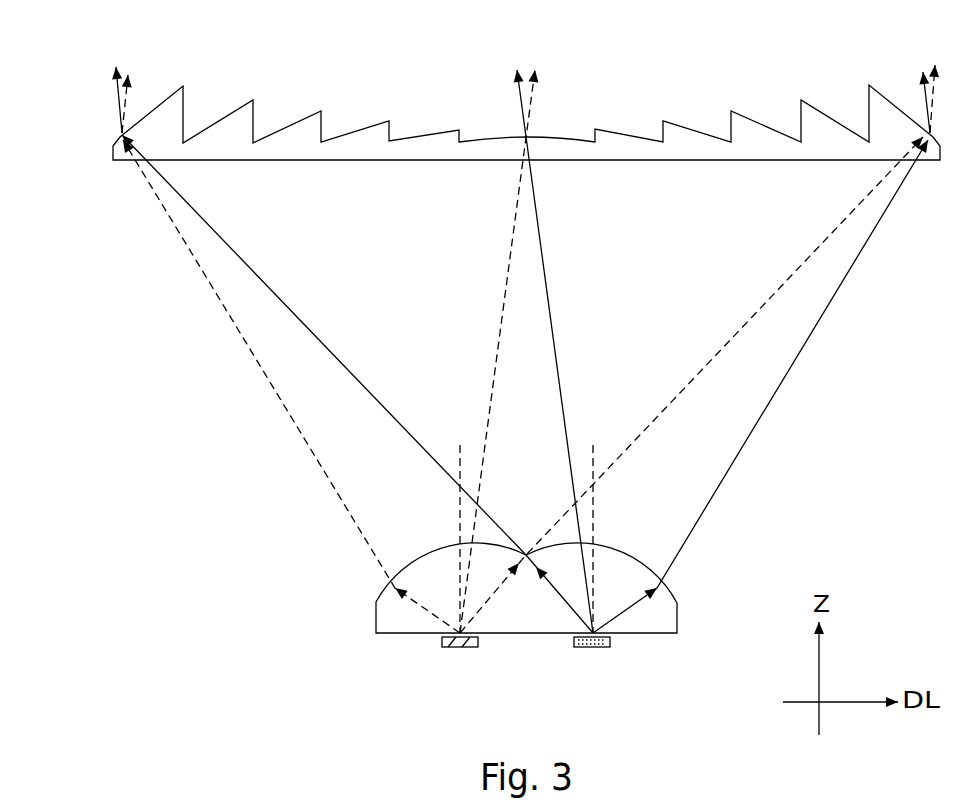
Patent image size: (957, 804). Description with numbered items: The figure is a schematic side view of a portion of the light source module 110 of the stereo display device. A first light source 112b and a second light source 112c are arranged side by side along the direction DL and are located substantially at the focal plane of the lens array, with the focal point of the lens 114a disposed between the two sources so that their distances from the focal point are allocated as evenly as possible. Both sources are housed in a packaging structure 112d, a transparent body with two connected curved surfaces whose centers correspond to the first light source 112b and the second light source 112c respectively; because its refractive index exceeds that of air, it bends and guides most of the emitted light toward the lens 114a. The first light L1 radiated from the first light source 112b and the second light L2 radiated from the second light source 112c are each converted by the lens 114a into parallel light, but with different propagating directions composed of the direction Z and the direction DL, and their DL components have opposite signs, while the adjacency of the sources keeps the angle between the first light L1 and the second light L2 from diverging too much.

The lens 114a is at (353, 147).
The light source module 110 is at (555, 647).
The first light source 112b is at (462, 647).
The second light source 112c is at (593, 667).
The packaging structure 112d is at (663, 627).
The first light L1 is at (710, 360).
The second light L2 is at (343, 358).